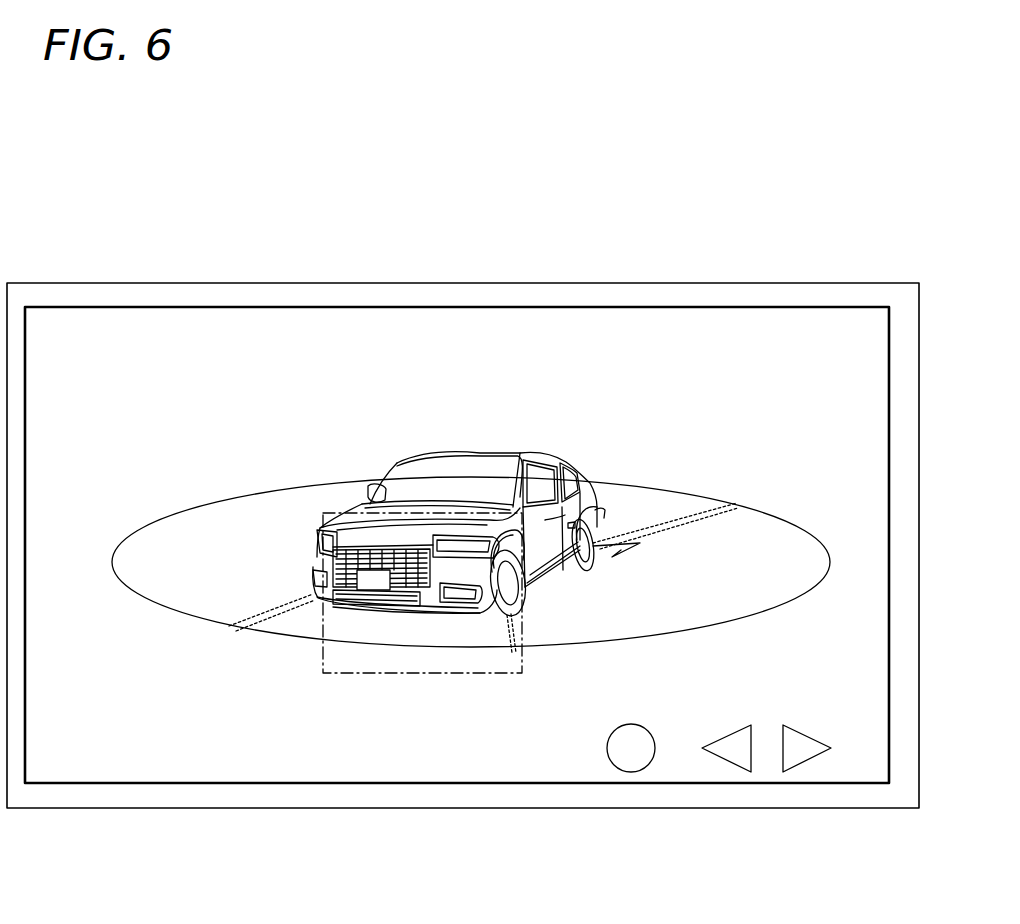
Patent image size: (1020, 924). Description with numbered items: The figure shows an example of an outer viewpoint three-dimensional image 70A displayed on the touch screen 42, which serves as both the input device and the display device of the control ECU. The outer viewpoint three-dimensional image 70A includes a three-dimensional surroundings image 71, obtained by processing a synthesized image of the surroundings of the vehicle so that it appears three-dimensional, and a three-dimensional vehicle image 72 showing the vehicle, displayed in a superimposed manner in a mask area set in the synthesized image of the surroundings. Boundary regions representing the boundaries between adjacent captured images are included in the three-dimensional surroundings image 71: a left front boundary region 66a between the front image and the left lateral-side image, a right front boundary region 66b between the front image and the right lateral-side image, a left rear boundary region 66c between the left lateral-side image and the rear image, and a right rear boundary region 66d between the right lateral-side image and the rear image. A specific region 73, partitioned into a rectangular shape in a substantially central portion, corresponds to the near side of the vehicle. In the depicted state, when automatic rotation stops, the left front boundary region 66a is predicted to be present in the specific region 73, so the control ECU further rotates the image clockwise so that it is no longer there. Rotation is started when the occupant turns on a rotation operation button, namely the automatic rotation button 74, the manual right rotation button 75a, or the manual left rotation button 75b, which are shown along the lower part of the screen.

The touch screen 42 is at (636, 283).
The outer viewpoint three-dimensional image 70A is at (272, 307).
The three-dimensional surroundings image 71 is at (775, 515).
The three-dimensional vehicle image 72 is at (520, 450).
The specific region 73 is at (387, 676).
The left front boundary region 66a is at (514, 655).
The right front boundary region 66b is at (244, 633).
The left rear boundary region 66c is at (715, 512).
The right rear boundary region 66d is at (390, 481).
The automatic rotation button 74 is at (653, 760).
The manual right rotation button 75a is at (808, 761).
The manual left rotation button 75b is at (727, 761).